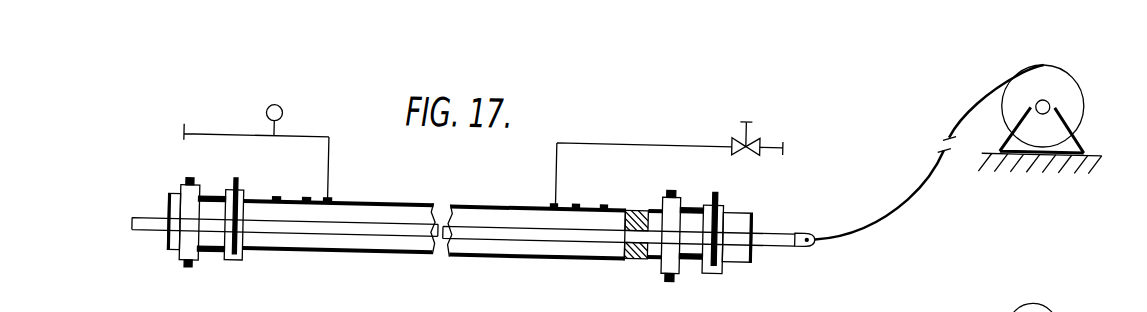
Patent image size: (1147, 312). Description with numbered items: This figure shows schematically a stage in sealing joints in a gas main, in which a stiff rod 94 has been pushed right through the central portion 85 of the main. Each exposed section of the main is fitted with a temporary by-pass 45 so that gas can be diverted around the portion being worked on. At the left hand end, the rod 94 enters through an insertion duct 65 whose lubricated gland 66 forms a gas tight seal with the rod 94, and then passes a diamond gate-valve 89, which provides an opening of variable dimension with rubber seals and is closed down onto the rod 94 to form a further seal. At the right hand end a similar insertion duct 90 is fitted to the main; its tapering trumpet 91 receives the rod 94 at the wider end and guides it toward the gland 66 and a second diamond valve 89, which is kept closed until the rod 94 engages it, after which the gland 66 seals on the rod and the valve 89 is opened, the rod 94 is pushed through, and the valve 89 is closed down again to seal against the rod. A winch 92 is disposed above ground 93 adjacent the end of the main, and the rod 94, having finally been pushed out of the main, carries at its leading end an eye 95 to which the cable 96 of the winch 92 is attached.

The temporary by-pass 45 is at (295, 132).
The insertion duct 65 is at (211, 196).
The lubricated gland 66 is at (178, 259).
The central portion of the main 85 is at (410, 248).
The diamond gate-valve 89 is at (237, 230).
The insertion duct 90 is at (640, 249).
The tapering trumpet 91 is at (640, 199).
The winch 92 is at (1077, 77).
The ground 93 is at (1043, 147).
The stiff rod 94 is at (510, 233).
The eye 95 is at (810, 232).
The cable 96 is at (912, 185).